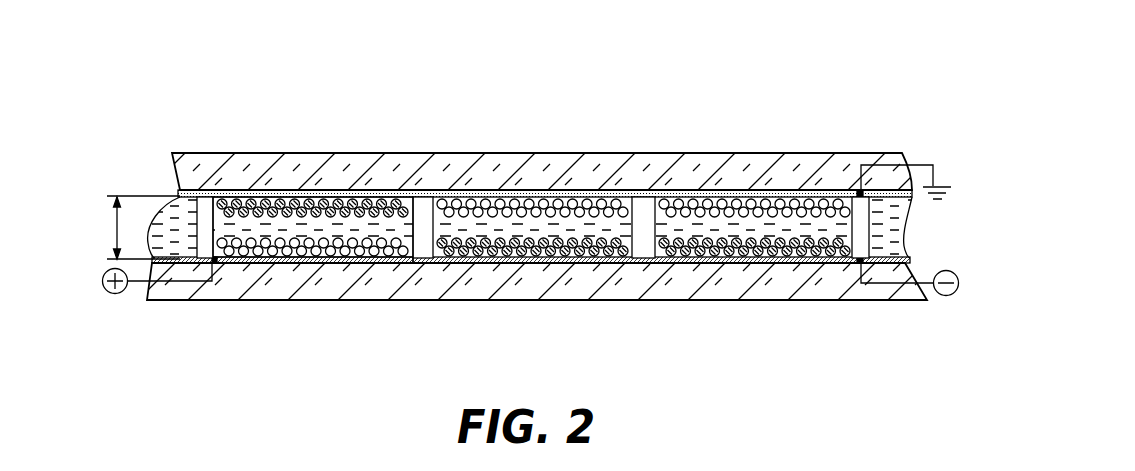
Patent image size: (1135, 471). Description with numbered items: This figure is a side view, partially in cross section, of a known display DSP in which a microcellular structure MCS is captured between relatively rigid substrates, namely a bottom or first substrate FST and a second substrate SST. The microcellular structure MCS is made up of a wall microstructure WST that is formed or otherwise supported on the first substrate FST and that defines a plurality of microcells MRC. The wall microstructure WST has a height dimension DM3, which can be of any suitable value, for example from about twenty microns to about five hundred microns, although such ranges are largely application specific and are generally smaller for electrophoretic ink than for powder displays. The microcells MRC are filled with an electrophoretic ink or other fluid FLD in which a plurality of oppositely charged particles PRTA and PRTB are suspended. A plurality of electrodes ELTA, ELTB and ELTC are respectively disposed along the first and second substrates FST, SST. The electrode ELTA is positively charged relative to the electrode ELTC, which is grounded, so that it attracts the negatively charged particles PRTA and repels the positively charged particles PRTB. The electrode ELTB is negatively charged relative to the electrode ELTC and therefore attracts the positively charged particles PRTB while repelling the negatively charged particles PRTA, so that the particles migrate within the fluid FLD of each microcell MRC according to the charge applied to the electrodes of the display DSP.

The display DSP is at (268, 66).
The second substrate SST is at (208, 185).
The first substrate FST is at (198, 288).
The wall microstructure WST is at (203, 218).
The electrode ELTA is at (228, 262).
The electrode ELTB is at (798, 260).
The electrode ELTC is at (793, 193).
The fluid FLD is at (557, 228).
The particles PRTA is at (335, 248).
The particles PRTB is at (620, 248).
The microcell MRC is at (405, 216).
The microcellular structure MCS is at (642, 196).
The height dimension DM3 is at (136, 227).